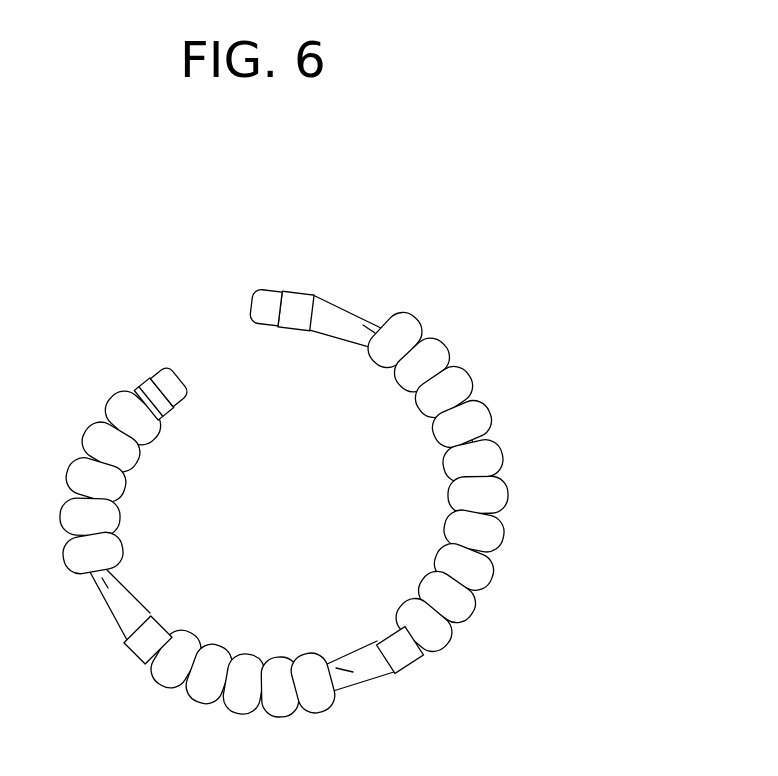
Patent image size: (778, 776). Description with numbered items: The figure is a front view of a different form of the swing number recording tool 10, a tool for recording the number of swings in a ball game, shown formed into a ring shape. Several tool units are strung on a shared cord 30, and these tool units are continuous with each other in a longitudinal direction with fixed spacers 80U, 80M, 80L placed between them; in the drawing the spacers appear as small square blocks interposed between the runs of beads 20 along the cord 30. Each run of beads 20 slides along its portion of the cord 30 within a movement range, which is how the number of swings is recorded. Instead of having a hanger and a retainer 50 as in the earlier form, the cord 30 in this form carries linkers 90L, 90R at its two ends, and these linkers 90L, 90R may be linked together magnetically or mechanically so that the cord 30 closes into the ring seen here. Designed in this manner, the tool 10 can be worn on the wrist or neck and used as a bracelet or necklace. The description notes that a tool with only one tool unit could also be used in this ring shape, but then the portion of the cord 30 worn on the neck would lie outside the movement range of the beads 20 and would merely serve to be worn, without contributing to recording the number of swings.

The swing number recording tool 10 is at (463, 287).
The beads 20 is at (452, 386).
The cord 30 is at (365, 673).
The retainer 50 is at (148, 395).
The fixed spacer 80U is at (302, 290).
The fixed spacer 80L is at (132, 644).
The fixed spacer 80M is at (413, 666).
The linker 90R is at (268, 297).
The linker 90L is at (172, 376).